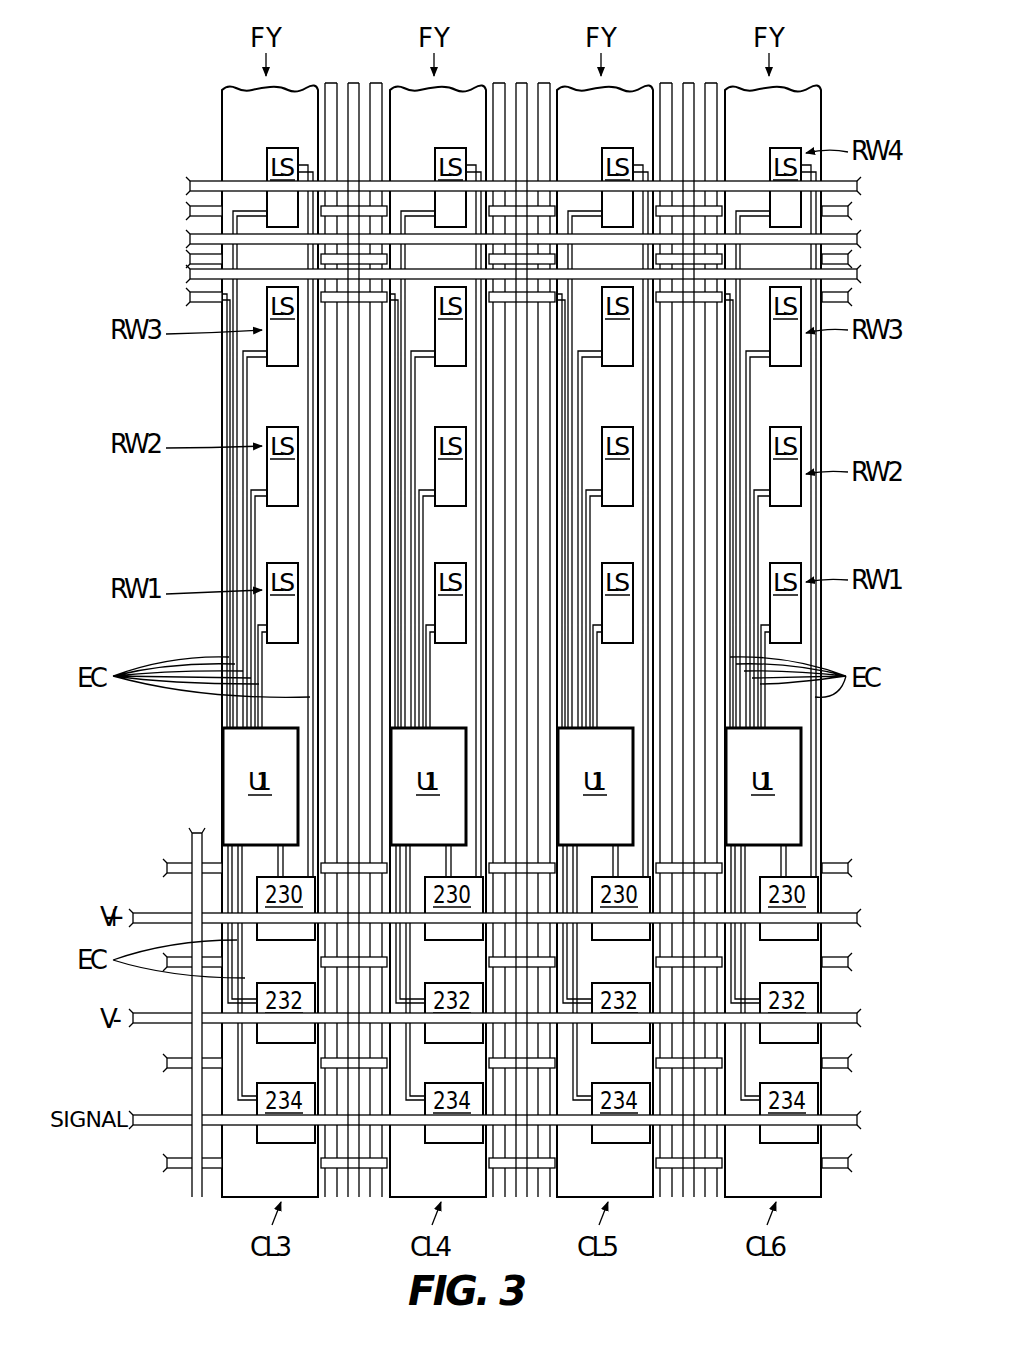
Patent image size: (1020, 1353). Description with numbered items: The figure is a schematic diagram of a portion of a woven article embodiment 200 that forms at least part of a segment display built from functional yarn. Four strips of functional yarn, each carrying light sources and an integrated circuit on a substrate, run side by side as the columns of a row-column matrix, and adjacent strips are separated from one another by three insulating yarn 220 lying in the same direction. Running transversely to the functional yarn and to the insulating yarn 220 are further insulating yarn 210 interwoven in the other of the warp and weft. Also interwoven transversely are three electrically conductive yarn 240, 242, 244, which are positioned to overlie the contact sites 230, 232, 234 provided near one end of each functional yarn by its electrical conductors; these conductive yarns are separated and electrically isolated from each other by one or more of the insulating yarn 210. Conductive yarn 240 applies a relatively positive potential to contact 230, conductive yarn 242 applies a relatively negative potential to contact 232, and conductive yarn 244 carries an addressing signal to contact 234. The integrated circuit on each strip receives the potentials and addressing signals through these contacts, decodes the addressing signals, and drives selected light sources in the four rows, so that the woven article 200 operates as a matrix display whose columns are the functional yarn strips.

The woven article embodiment 200 is at (110, 24).
The insulating yarn 210 is at (186, 297).
The insulating yarn 220 is at (197, 1197).
The contact 230 is at (537, 908).
The contact 232 is at (537, 1013).
The contact 234 is at (537, 1113).
The electrically conductive yarn 240 is at (842, 913).
The electrically conductive yarn 242 is at (842, 1013).
The electrically conductive yarn 244 is at (842, 1115).